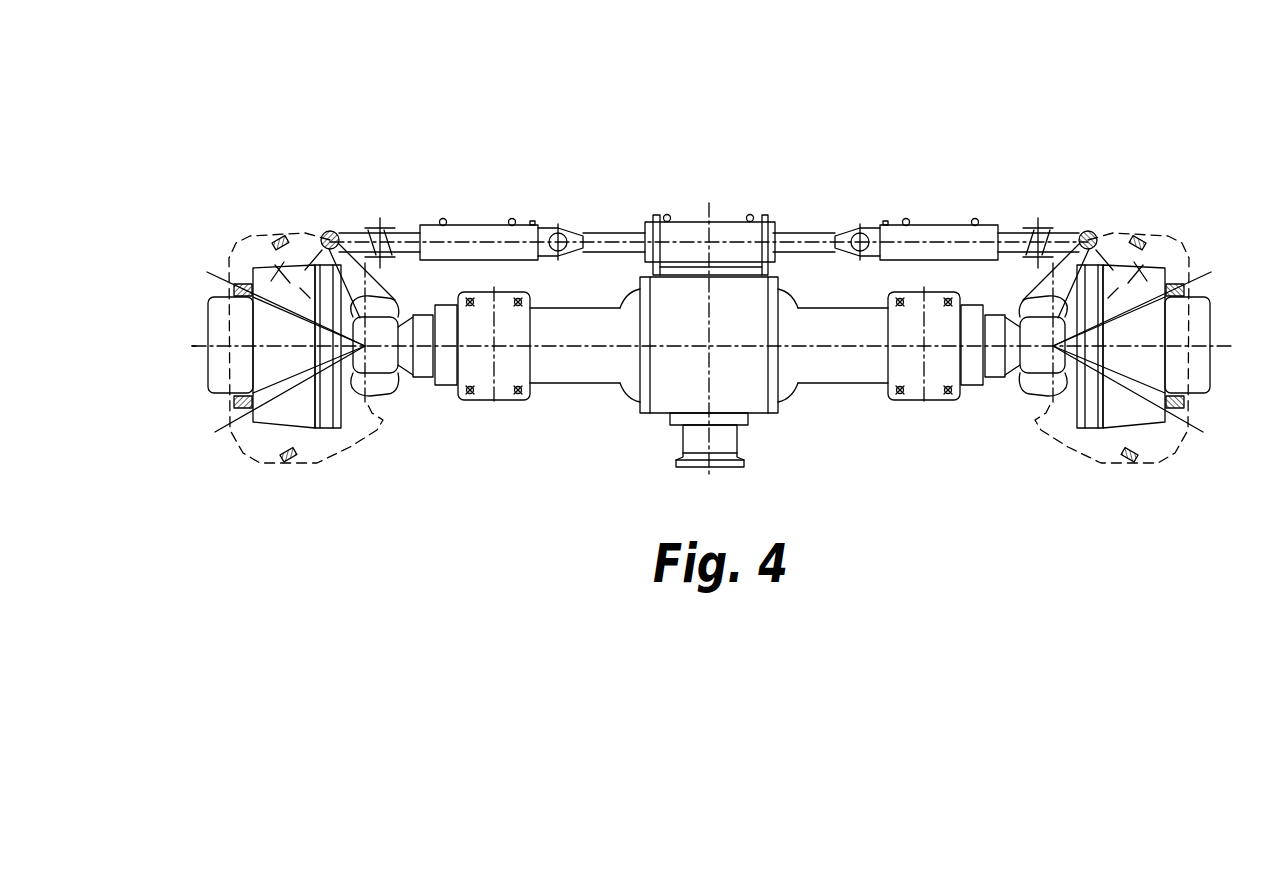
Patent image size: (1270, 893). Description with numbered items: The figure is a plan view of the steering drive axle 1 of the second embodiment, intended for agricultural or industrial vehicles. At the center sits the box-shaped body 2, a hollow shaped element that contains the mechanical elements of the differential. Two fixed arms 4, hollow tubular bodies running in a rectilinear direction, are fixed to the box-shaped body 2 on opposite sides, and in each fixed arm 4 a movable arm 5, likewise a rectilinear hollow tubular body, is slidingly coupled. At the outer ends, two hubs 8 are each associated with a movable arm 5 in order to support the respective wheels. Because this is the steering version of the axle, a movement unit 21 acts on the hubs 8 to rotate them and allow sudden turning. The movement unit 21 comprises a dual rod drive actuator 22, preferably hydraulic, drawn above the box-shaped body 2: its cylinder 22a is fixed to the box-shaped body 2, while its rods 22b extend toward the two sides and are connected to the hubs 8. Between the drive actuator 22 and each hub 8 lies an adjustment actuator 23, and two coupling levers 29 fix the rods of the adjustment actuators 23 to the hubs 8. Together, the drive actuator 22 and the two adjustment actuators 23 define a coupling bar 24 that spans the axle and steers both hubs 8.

The drive axle 1 is at (1142, 105).
The box-shaped body 2 is at (663, 392).
The fixed arm 4 is at (570, 388).
The movable arm 5 is at (445, 388).
The hub 8 is at (222, 326).
The movement unit 21 is at (708, 187).
The drive actuator 22 is at (733, 216).
The cylinder 22a is at (690, 221).
The rod 22b is at (598, 233).
The adjustment actuator 23 is at (456, 226).
The coupling bar 24 is at (486, 190).
The coupling lever 29 is at (352, 265).